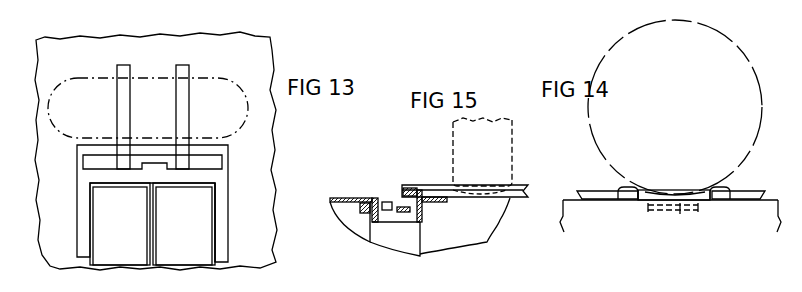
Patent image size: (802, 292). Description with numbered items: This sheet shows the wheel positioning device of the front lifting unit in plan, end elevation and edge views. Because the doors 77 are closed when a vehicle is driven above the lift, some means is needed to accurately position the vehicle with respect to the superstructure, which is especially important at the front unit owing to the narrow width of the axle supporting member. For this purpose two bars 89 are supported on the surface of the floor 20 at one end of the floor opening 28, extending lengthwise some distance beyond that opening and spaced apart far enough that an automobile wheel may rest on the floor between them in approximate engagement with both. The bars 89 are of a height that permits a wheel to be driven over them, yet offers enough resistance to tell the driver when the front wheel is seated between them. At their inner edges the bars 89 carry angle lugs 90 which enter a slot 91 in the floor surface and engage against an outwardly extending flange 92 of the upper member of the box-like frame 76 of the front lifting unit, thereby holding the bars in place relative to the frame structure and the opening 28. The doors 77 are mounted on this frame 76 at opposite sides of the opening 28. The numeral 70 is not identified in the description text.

In FIG. 13, the floor 20 is at (156, 151).
In FIG. 15, the floor 20 is at (494, 210).
In FIG. 14, the floor 20 is at (670, 212).
In FIG. 13, the bars 89 is at (176, 116).
In FIG. 15, the bars 89 is at (514, 192).
In FIG. 14, the bars 89 is at (626, 200).
In FIG. 13, the bracket 70 is at (220, 178).
In FIG. 13, the floor opening 28 is at (215, 221).
In FIG. 13, the doors 77 is at (192, 247).
In FIG. 15, the box-like frame 76 is at (372, 198).
In FIG. 15, the slot 91 is at (408, 190).
In FIG. 15, the outwardly extending flange 92 is at (436, 200).
In FIG. 15, the angle lugs 90 is at (410, 206).
In FIG. 14, the angle lugs 90 is at (680, 212).